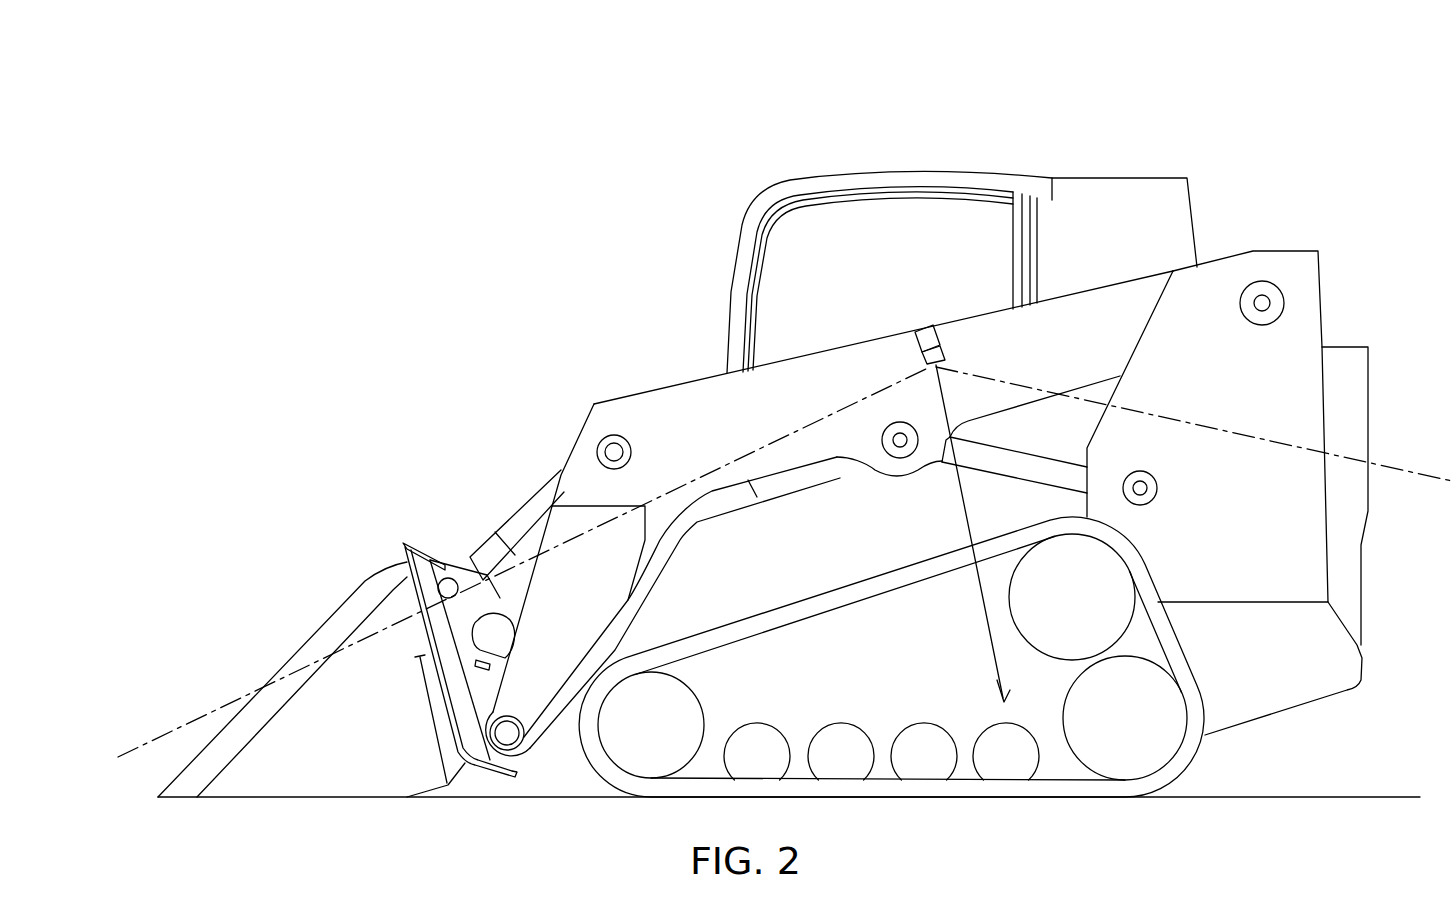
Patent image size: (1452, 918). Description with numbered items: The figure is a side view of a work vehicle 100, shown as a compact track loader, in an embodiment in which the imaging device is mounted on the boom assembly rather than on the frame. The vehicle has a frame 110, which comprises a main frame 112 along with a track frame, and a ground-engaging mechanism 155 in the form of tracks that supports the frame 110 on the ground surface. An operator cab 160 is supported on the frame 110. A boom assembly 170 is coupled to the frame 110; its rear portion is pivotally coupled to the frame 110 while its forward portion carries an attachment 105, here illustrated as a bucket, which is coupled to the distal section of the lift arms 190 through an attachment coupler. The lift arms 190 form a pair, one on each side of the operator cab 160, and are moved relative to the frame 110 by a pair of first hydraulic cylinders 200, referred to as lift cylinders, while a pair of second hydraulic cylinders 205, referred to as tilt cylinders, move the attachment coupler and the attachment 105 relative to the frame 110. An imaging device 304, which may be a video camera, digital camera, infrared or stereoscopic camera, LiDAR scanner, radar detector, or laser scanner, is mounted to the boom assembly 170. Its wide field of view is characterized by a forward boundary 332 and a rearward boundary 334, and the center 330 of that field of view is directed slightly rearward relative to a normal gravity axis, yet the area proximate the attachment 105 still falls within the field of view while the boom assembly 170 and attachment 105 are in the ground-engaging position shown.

The work vehicle 100 is at (448, 98).
The attachment 105 is at (330, 720).
The frame 110 is at (1282, 416).
The main frame 112 is at (1138, 482).
The ground-engaging mechanism 155 is at (853, 594).
The operator cab 160 is at (873, 178).
The boom assembly 170 is at (360, 462).
The lift arms 190 is at (676, 428).
The first hydraulic cylinders 200 is at (1028, 466).
The second hydraulic cylinders 205 is at (483, 552).
The imaging device 304 is at (914, 331).
The center of the field of view 330 is at (940, 513).
The forward boundary 332 is at (170, 730).
The rearward boundary 334 is at (1270, 444).